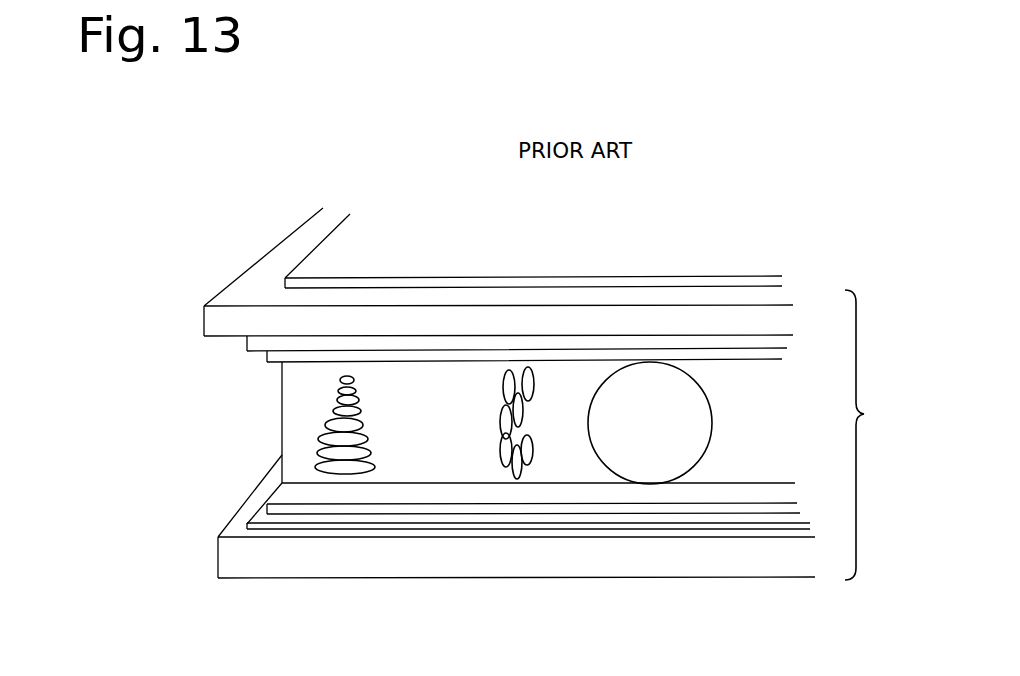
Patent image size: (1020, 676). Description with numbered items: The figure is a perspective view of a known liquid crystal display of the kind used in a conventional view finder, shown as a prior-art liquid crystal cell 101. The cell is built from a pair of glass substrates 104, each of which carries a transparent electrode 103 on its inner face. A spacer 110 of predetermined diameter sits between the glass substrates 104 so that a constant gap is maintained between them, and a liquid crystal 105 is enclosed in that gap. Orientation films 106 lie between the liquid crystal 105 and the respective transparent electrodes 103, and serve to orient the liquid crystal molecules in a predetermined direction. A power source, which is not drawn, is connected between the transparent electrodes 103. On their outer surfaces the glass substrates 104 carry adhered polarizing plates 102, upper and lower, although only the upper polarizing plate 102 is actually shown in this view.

The liquid crystal cell 101 is at (880, 435).
The polarizing plate 102 is at (350, 242).
The transparent electrode 103 is at (247, 343).
The glass substrate 104 is at (228, 322).
The liquid crystal 105 is at (302, 398).
The orientation film 106 is at (274, 364).
The spacer 110 is at (673, 408).